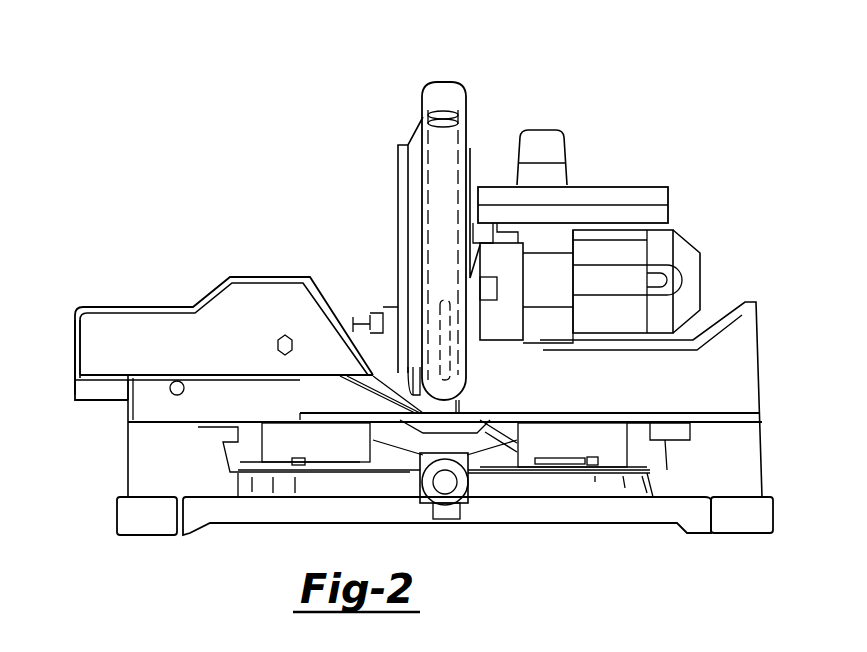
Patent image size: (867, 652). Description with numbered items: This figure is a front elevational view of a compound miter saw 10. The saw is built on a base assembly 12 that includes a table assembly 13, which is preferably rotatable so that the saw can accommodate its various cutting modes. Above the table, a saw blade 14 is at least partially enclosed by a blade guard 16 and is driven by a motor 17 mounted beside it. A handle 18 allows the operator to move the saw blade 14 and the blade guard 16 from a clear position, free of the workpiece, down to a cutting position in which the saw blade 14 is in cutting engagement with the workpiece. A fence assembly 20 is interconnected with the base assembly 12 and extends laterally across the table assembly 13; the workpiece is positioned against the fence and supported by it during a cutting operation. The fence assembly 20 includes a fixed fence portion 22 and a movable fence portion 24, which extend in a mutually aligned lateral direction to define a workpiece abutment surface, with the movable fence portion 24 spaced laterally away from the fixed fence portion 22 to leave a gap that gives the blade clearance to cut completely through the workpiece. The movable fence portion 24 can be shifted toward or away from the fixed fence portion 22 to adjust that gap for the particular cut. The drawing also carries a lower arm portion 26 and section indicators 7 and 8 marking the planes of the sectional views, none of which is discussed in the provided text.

The compound miter saw 10 is at (60, 337).
The base assembly 12 is at (760, 450).
The table assembly 13 is at (600, 405).
The saw blade 14 is at (465, 373).
The blade guard 16 is at (448, 90).
The motor 17 is at (698, 250).
The handle 18 is at (648, 183).
The fence assembly 20 is at (112, 283).
The fixed fence portion 22 is at (725, 330).
The movable fence portion 24 is at (102, 327).
The lower arm portion 26 is at (128, 404).
The section line 7- 7 is at (185, 258).
The section line 8- 8 is at (283, 300).